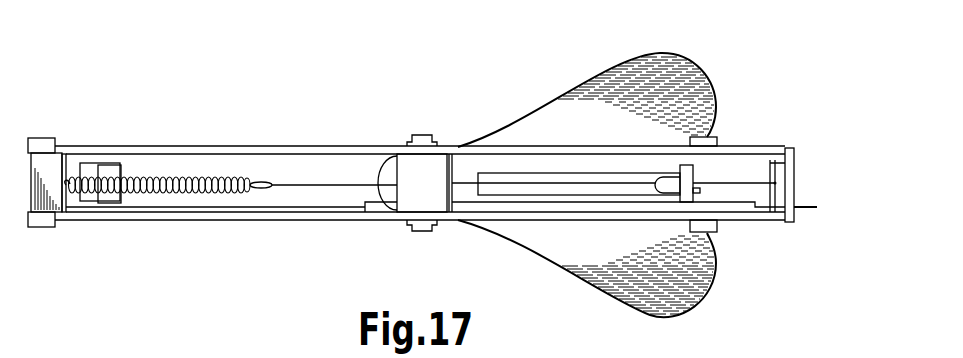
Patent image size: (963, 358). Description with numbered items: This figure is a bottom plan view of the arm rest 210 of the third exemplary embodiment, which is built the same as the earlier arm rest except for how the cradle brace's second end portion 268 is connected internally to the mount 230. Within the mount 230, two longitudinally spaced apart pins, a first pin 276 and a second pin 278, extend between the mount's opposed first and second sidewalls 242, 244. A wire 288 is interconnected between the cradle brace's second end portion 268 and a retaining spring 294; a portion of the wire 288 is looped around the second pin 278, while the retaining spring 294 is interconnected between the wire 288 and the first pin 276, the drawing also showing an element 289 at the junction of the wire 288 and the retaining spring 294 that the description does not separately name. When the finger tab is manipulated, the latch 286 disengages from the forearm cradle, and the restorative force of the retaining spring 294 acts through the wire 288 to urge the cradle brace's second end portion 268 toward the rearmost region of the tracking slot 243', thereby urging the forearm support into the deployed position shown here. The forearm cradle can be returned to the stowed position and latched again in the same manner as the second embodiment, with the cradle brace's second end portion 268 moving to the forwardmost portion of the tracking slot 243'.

The arm rest 210 is at (437, 120).
The mount 230 is at (328, 147).
The first sidewall 242 is at (448, 147).
The guide channel 243' is at (618, 127).
The second sidewall 244 is at (227, 219).
The second end portion of the cradle brace 268 is at (690, 175).
The first pin 276 is at (77, 158).
The second pin 278 is at (782, 163).
The latch 286 is at (815, 208).
The wire 288 is at (317, 187).
The spring end fitting 289 is at (248, 182).
The retaining spring 294 is at (170, 178).